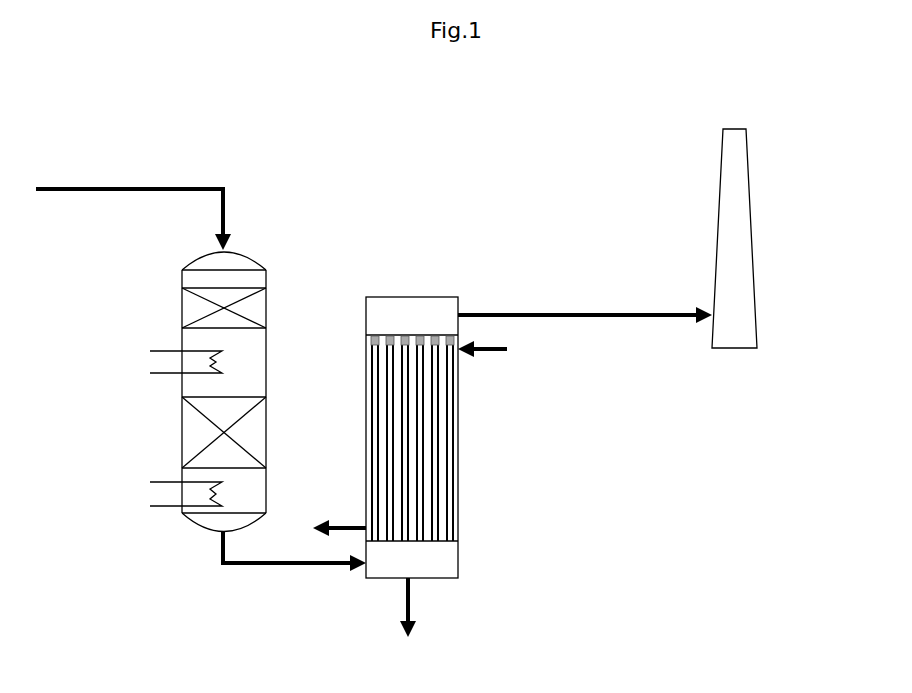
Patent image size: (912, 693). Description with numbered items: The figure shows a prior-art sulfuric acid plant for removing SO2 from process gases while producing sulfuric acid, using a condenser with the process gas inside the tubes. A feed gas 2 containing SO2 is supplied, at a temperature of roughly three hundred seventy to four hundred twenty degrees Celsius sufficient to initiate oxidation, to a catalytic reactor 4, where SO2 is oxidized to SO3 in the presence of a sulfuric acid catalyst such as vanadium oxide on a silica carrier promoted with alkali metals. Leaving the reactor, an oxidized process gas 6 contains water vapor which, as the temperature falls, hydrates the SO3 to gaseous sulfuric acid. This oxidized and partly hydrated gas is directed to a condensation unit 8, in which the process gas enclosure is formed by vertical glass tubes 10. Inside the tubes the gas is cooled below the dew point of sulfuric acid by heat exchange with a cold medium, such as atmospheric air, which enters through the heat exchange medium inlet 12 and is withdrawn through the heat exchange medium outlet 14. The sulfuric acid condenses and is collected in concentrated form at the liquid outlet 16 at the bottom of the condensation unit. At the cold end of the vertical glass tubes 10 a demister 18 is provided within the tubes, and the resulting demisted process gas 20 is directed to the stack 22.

The feed gas 2 is at (84, 189).
The catalytic reactor 4 is at (266, 290).
The oxidized process gas 6 is at (334, 566).
The condensation unit 8 is at (458, 420).
The vertical glass tubes 10 is at (372, 376).
The heat exchange medium inlet 12 is at (490, 356).
The heat exchange medium outlet 14 is at (350, 527).
The liquid outlet 16 is at (412, 596).
The demister 18 is at (372, 345).
The demisted process gas 20 is at (582, 316).
The stack 22 is at (760, 272).